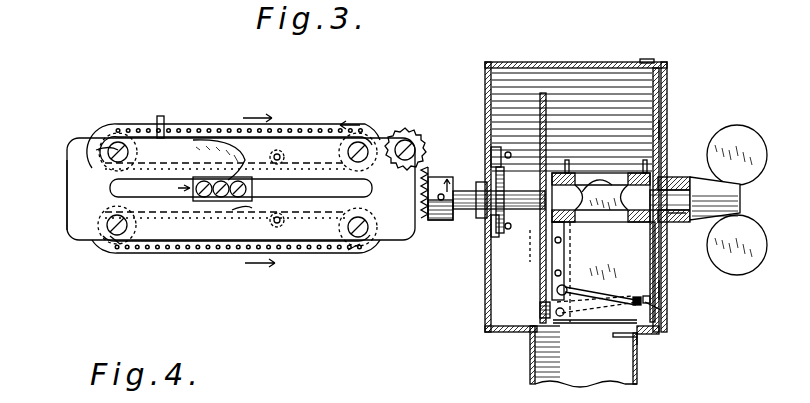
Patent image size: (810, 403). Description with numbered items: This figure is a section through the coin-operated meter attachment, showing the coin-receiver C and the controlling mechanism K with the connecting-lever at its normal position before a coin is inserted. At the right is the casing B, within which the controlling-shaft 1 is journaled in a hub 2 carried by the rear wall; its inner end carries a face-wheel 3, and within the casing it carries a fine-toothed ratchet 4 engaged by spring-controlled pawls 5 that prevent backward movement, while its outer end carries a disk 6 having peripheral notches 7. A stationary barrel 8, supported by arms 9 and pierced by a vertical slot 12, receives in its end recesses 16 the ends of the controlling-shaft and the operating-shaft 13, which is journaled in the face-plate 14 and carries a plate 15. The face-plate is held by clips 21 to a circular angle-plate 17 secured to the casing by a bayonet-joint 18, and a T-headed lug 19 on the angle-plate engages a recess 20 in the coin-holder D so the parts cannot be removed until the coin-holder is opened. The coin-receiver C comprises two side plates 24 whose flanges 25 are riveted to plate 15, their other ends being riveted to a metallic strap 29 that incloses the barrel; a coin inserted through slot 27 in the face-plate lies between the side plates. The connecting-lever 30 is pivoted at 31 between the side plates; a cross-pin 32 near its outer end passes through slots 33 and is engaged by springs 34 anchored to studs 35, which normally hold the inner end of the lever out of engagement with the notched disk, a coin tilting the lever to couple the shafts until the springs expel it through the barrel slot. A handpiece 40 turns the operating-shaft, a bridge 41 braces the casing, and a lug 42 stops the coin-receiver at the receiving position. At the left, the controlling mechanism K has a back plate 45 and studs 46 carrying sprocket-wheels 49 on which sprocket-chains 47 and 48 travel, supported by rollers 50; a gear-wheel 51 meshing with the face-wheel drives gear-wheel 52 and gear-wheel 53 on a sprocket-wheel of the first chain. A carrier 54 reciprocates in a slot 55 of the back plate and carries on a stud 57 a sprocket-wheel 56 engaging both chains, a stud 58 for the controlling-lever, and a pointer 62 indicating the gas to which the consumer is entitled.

The controlling-shaft 1 is at (510, 193).
The hub 2 is at (480, 218).
The face-wheel 3 is at (438, 220).
The ratchet 4 is at (506, 176).
The spring-controlled pawls 5 is at (500, 147).
The disk 6 is at (547, 124).
The notches 7 is at (546, 252).
The barrel 8 is at (600, 224).
The arms 9 is at (580, 137).
The slot 12 is at (601, 197).
The operating-shaft 13 is at (670, 199).
The face-plate 14 is at (668, 134).
The plate 15 is at (660, 264).
The recesses 16 is at (600, 178).
The circular angle-plate 17 is at (654, 62).
The bayonet-joint 18 is at (648, 334).
The T-headed lug 19 is at (620, 337).
The recess 20 is at (640, 340).
The clips 21 is at (664, 76).
The side plates 24 is at (613, 268).
The flanges 25 is at (652, 244).
The slot 27 is at (660, 282).
The metallic strap 29 is at (562, 172).
The connecting-lever 30 is at (540, 310).
The pivot 31 is at (554, 326).
The cross-pin 32 is at (636, 296).
The slots 33 is at (596, 310).
The springs 34 is at (604, 295).
The studs 35 is at (574, 295).
The handpiece 40 is at (728, 200).
The cross-piece or bridge 41 is at (688, 214).
The pin or lug 42 is at (666, 302).
The back plate 45 is at (68, 212).
The studs 46 is at (96, 150).
The sprocket-chain 47 is at (214, 126).
The sprocket-chain 48 is at (158, 254).
The sprocket-wheels 49 is at (116, 132).
The rollers 50 is at (284, 157).
The gear-wheel 51 is at (432, 186).
The gear-wheel 52 is at (417, 144).
The gear-wheel 53 is at (348, 127).
The carrier 54 is at (205, 138).
The slot 55 is at (306, 191).
The sprocket-wheel 56 is at (170, 189).
The stud 57 is at (200, 202).
The stud 58 is at (238, 212).
The pointer 62 is at (160, 116).
The casing B is at (582, 62).
The coin-receiver C is at (622, 249).
The coin-holder D is at (583, 356).
The controlling mechanism K is at (241, 172).